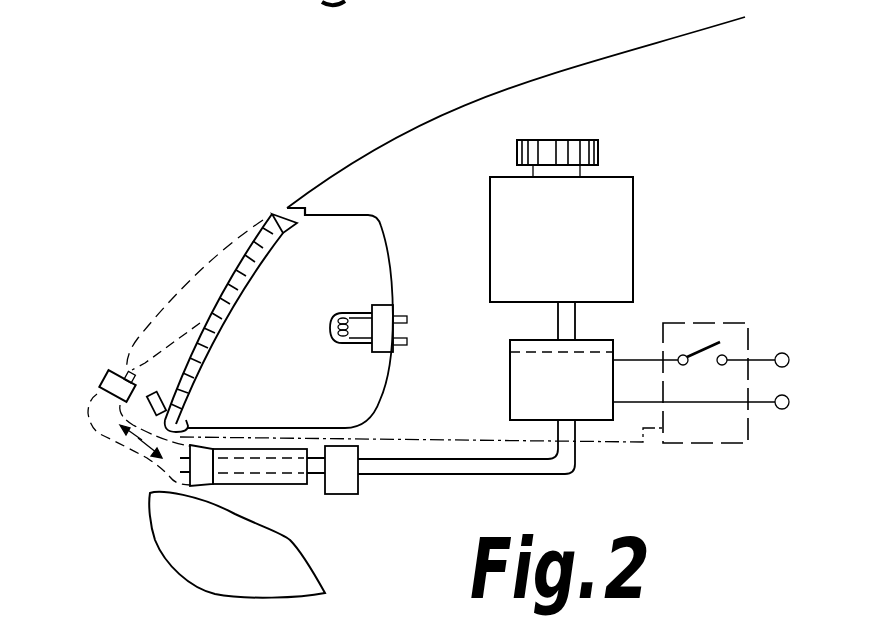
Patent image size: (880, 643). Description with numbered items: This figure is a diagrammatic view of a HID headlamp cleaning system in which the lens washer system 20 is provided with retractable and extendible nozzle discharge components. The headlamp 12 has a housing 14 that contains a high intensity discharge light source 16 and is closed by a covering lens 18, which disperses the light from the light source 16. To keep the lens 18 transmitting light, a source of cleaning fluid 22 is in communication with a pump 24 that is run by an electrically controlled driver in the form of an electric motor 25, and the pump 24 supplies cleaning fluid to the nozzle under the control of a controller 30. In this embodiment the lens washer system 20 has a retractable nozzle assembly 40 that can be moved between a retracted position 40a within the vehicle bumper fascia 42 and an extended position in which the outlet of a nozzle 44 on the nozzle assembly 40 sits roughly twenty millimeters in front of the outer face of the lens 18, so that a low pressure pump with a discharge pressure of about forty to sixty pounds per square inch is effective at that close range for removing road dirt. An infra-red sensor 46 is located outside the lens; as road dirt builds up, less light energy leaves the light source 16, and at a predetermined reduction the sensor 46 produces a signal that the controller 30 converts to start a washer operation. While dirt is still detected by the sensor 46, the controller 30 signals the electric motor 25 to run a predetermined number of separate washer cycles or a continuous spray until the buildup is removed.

The headlamp 12 is at (341, 205).
The housing 14 is at (377, 223).
The high intensity discharge light source 16 is at (326, 324).
The covering lens 18 is at (245, 259).
The lens washer system 20 is at (303, 492).
The source of cleaning fluid 22 is at (623, 203).
The pump 24 is at (520, 403).
The electric motor 25 is at (515, 349).
The controller 30 is at (695, 320).
The retractable nozzle assembly 40 is at (103, 442).
The retracted position 40a is at (186, 465).
The vehicle bumper fascia 42 is at (163, 538).
The nozzle 44 is at (108, 374).
The infra-red sensor 46 is at (158, 402).